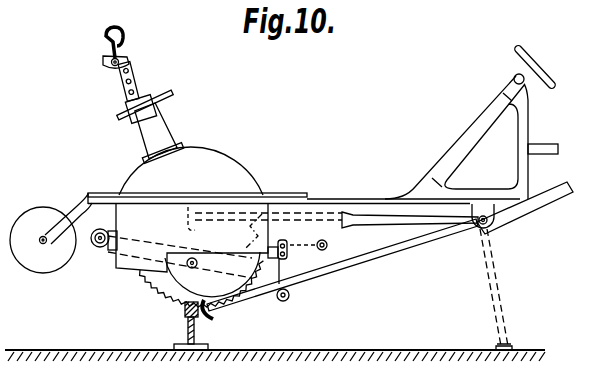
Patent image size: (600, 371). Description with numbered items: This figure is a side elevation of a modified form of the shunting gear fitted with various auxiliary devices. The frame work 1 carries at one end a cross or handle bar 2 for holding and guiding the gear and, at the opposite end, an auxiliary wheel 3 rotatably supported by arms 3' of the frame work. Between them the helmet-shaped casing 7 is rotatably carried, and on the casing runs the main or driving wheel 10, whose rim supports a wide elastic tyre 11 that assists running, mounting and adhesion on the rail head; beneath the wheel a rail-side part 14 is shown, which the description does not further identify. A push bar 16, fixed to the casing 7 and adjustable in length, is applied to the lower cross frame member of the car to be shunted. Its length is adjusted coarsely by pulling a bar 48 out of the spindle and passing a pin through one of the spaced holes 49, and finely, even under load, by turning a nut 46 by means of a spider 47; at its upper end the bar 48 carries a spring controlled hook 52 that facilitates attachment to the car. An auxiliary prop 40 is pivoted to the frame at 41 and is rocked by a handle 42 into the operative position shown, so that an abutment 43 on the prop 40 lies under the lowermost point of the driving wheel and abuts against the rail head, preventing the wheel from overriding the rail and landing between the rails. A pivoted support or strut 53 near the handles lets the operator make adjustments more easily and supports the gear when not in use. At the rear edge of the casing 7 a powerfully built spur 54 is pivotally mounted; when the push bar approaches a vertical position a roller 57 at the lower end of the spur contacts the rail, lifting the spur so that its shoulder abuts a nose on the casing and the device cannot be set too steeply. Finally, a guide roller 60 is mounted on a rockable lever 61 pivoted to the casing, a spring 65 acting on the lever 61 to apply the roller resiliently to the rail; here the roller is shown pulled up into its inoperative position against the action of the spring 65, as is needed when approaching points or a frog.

The frame work 1 is at (123, 192).
The cross or handle bar 2 is at (510, 97).
The auxiliary wheel 3 is at (43, 251).
The arms 3' is at (68, 211).
The helmet-shaped casing 7 is at (232, 168).
The main or driving wheel 10 is at (173, 286).
The elastic tyre 11 is at (147, 280).
The support stand 14 is at (189, 330).
The push bar 16 is at (147, 133).
The auxiliary prop 40 is at (378, 255).
The pivot 41 is at (484, 213).
The handle 42 is at (556, 203).
The abutment 43 is at (209, 305).
The nut 46 is at (150, 110).
The spider 47 is at (167, 97).
The bar 48 is at (127, 89).
The spaced holes 49 is at (131, 70).
The spring controlled hook 52 is at (123, 48).
The pivoted support or strut 53 is at (373, 217).
The spur 54 is at (288, 255).
The roller 57 is at (284, 300).
The guide roller 60 is at (100, 248).
The rockable lever 61 is at (138, 240).
The spring 65 is at (266, 246).